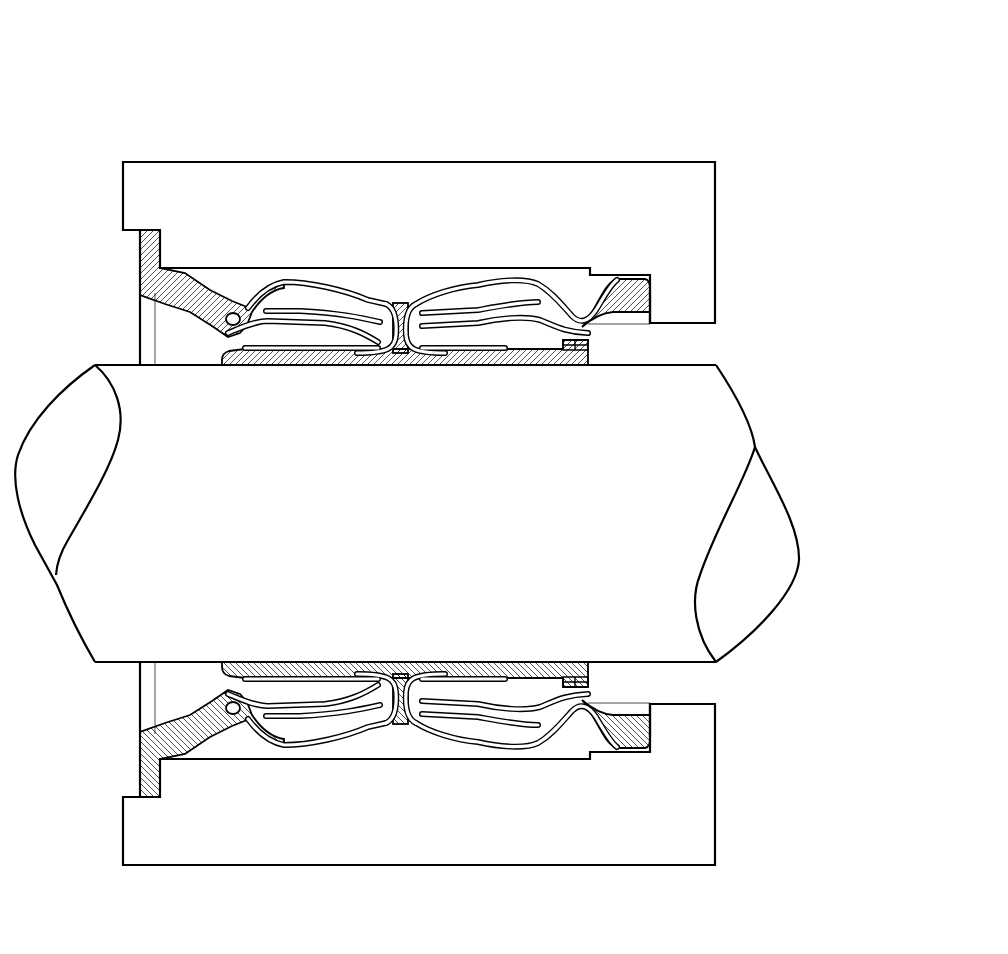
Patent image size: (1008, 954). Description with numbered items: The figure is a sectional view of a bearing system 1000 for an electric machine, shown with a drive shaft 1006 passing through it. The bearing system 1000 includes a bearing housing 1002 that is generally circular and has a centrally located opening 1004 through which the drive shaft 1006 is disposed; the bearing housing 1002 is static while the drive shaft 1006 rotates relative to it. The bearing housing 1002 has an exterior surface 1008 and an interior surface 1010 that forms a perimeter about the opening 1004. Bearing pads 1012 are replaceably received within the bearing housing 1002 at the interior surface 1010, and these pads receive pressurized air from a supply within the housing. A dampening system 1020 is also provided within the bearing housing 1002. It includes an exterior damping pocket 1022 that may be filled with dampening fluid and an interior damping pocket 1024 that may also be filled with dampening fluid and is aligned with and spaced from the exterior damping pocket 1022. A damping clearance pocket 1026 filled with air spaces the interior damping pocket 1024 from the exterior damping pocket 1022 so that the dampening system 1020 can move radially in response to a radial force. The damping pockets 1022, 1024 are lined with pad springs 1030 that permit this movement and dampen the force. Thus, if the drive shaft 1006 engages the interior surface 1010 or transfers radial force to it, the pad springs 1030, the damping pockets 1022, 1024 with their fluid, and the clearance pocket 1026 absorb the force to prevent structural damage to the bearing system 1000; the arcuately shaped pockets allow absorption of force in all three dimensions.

The bearing system 1000 is at (546, 60).
The bearing housing 1002 is at (334, 178).
The opening 1004 is at (693, 325).
The drive shaft 1006 is at (436, 535).
The exterior surface 1008 is at (493, 180).
The interior surface 1010 is at (420, 282).
The bearing pad 1012 is at (538, 354).
The dampening system 1020 is at (310, 226).
The exterior damping pocket 1022 is at (292, 295).
The interior damping pocket 1024 is at (272, 352).
The damping clearance pocket 1026 is at (364, 352).
The pad spring 1030 is at (165, 297).